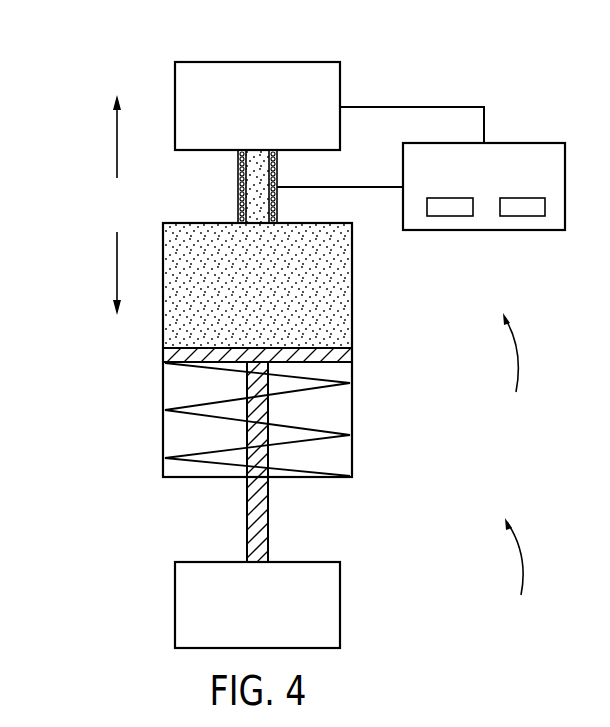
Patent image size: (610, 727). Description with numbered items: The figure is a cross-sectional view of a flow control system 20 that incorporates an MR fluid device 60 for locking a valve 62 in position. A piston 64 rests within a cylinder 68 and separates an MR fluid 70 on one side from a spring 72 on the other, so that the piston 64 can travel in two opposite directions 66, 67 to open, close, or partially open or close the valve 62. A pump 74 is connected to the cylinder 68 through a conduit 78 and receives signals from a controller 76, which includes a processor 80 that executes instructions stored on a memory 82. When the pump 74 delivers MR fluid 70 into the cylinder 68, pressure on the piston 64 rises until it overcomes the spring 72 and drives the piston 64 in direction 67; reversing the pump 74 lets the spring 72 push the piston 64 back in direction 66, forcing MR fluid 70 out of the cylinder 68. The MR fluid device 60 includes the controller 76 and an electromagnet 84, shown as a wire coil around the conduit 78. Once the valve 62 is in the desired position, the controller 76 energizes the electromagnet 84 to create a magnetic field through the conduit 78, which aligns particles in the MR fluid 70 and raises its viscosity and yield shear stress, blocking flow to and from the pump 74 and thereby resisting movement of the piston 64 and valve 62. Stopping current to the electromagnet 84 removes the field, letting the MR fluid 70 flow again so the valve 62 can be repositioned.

The flow control system 20 is at (517, 569).
The MR fluid device 60 is at (514, 365).
The valve 62 is at (340, 604).
The piston 64 is at (352, 356).
The direction 66 is at (117, 142).
The direction 67 is at (117, 268).
The cylinder 68 is at (353, 283).
The MR fluid 70 is at (330, 332).
The spring 72 is at (310, 440).
The pump 74 is at (257, 62).
The controller 76 is at (525, 143).
The conduit 78 is at (277, 207).
The processor 80 is at (450, 216).
The memory 82 is at (523, 216).
The electromagnet 84 is at (238, 187).